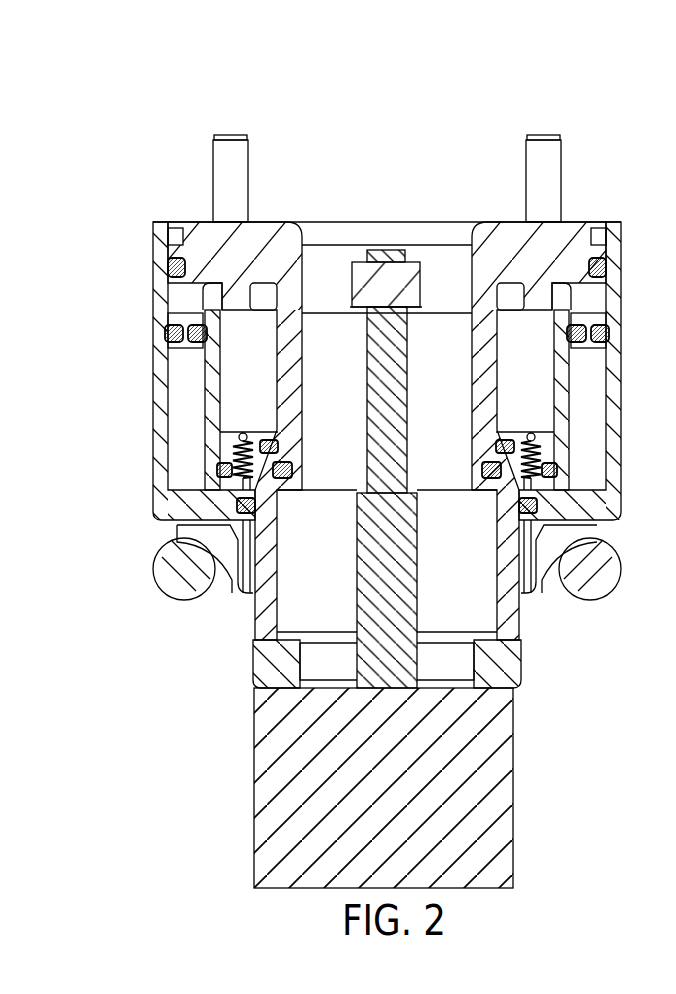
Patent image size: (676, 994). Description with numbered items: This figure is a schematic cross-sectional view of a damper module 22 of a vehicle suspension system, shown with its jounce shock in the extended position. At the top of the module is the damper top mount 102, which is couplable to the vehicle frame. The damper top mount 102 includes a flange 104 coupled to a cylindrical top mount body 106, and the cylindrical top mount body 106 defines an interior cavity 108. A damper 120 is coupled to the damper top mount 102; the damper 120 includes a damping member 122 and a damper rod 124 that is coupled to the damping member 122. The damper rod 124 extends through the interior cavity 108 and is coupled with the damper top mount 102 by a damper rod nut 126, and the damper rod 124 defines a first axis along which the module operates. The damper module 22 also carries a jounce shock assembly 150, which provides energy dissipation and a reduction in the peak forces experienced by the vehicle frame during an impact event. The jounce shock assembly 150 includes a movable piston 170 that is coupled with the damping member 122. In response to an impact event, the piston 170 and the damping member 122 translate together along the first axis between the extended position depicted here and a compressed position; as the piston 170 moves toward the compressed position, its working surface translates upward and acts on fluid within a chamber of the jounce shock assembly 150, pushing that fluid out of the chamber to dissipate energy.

The damper module 22 is at (263, 98).
The damper top mount 102 is at (451, 177).
The flange 104 is at (203, 237).
The cylindrical top mount body 106 is at (290, 315).
The interior cavity 108 is at (453, 330).
The damper 120 is at (239, 811).
The damping member 122 is at (497, 765).
The damper rod 124 is at (368, 650).
The damper rod nut 126 is at (372, 262).
The jounce shock assembly 150 is at (134, 391).
The piston 170 is at (505, 662).